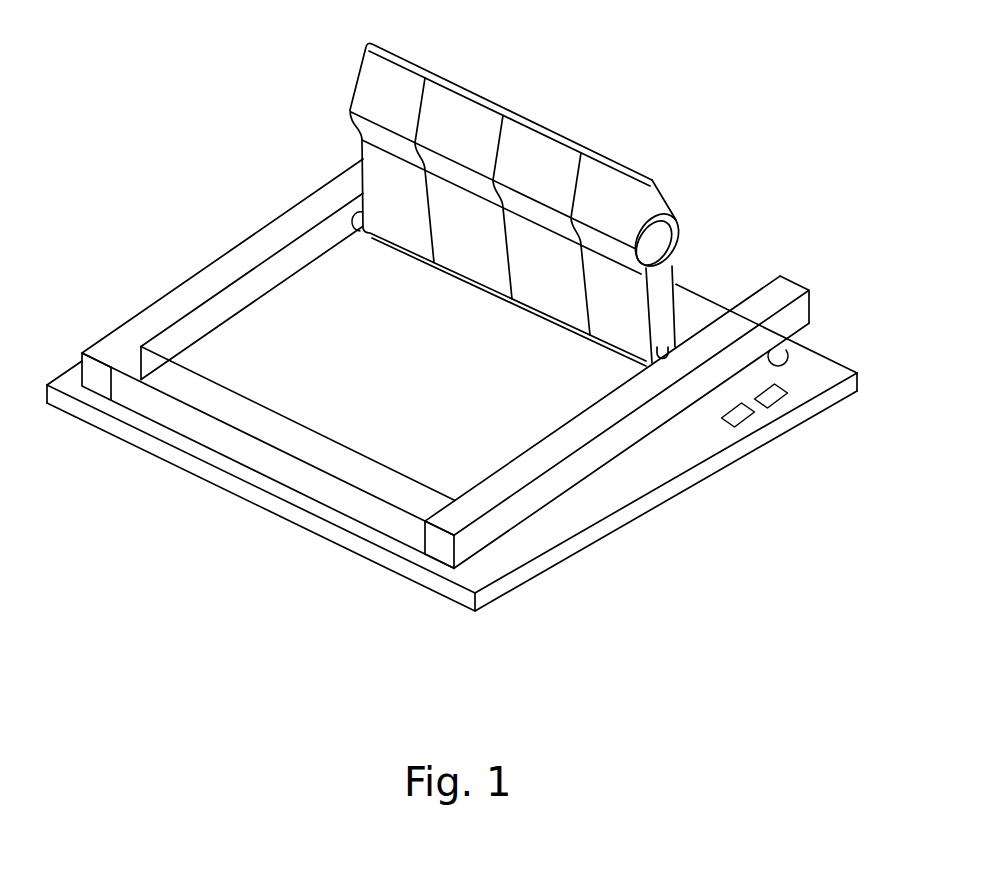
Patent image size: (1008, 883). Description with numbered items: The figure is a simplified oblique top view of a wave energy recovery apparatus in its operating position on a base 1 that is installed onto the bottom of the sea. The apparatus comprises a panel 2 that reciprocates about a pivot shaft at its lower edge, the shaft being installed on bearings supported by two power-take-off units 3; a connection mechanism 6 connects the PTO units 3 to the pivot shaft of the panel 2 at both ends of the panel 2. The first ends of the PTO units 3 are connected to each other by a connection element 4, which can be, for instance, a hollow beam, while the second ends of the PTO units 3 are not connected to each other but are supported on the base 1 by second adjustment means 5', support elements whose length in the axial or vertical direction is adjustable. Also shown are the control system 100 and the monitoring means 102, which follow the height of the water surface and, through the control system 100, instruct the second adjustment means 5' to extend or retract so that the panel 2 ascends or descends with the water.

The base 1 is at (710, 468).
The panel 2 is at (467, 88).
The power-take-off unit 3 is at (275, 228).
The connection element 4 is at (390, 483).
The second adjustment means 5' is at (824, 305).
The connection mechanism 6 is at (366, 231).
The control system 100 is at (737, 426).
The monitoring means 102 is at (783, 388).